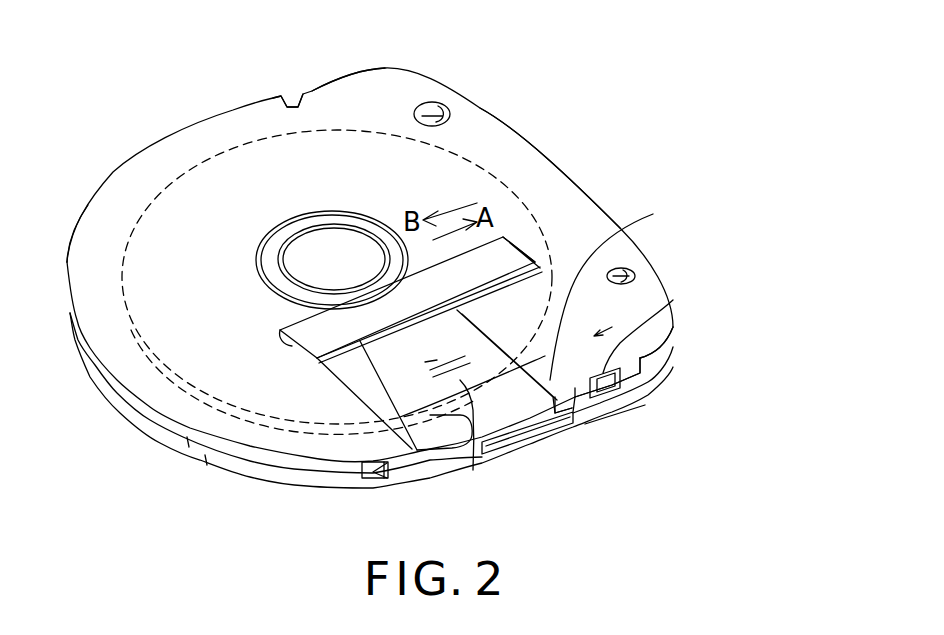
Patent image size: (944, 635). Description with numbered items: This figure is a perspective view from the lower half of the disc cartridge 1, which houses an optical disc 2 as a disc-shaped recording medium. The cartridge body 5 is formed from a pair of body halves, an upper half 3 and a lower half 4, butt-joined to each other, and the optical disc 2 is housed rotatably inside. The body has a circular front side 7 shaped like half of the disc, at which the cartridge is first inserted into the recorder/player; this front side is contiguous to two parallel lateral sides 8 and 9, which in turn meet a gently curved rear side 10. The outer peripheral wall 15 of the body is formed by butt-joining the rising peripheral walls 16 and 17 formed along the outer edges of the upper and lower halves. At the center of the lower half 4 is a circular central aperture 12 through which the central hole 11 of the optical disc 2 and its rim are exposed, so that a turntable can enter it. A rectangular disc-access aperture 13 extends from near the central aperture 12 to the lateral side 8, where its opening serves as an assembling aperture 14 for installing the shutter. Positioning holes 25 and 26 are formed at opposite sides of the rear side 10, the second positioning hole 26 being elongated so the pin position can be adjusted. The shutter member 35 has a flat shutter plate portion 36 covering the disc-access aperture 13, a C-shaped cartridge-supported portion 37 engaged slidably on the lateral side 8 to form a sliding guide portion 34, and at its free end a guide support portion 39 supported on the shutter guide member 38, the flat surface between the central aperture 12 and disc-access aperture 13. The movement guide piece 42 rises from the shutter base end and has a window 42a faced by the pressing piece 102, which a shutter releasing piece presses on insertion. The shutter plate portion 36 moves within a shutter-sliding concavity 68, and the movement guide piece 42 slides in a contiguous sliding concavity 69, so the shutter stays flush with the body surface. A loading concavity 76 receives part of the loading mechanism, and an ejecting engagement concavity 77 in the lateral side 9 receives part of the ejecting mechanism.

The disc cartridge 1 is at (233, 110).
The optical disc 2 is at (205, 170).
The upper half 3 is at (717, 335).
The lower half 4 is at (672, 344).
The cartridge body 5 is at (408, 278).
The circular front side 7 is at (67, 262).
The lateral side 8 is at (637, 390).
The lateral side 9 is at (328, 78).
The rear side 10 is at (563, 167).
The central hole 11 is at (337, 248).
The circular central aperture 12 is at (284, 238).
The disc-access aperture 13 is at (453, 413).
The assembling aperture 14 is at (537, 433).
The outer peripheral wall 15 is at (183, 517).
The rising peripheral wall 16 is at (187, 440).
The rising peripheral wall 17 is at (205, 460).
The first positioning hole 25 is at (628, 272).
The second positioning hole 26 is at (446, 112).
The sliding guide portion 34 is at (530, 425).
The shutter member 35 is at (673, 303).
The shutter plate portion 36 is at (645, 214).
The cartridge-supported portion 37 is at (588, 405).
The shutter guide member 38 is at (285, 340).
The guide support portion 39 is at (543, 247).
The movement guide piece 42 is at (570, 397).
The window 42a is at (612, 408).
The shutter-sliding concavity 68 is at (548, 290).
The sliding concavity 69 is at (617, 392).
The loading concavity 76 is at (373, 473).
The ejecting engagement concavity 77 is at (292, 97).
The pressing piece 102 is at (673, 326).